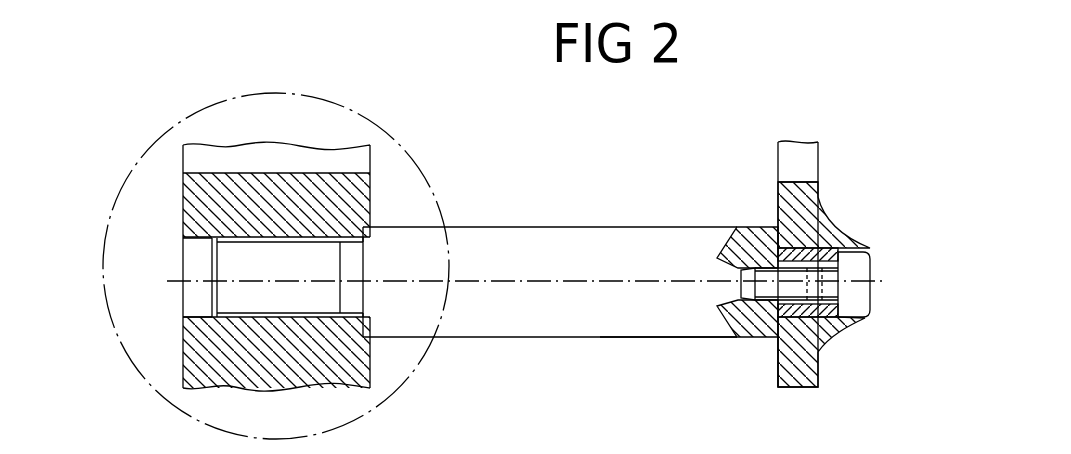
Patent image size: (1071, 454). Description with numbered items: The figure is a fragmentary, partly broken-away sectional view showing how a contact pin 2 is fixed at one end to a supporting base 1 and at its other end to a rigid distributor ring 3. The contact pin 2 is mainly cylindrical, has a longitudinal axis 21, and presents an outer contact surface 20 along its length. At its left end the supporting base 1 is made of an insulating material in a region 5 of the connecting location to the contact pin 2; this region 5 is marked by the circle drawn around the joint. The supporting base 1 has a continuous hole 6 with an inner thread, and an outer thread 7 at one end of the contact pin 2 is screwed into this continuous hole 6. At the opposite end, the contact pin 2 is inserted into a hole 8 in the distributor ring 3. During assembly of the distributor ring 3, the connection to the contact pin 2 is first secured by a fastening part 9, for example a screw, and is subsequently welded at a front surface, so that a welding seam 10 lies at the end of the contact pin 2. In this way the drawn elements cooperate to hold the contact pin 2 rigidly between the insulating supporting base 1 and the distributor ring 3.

The supporting base 1 is at (355, 192).
The contact pin 2 is at (600, 246).
The distributor ring 3 is at (818, 197).
The region 5 is at (311, 96).
The continuous hole 6 is at (197, 294).
The outer thread 7 is at (215, 220).
The hole 8 is at (778, 365).
The fastening part 9 is at (868, 295).
The welding seam 10 is at (838, 233).
The outer contact surface 20 is at (630, 338).
The longitudinal axis 21 is at (557, 283).